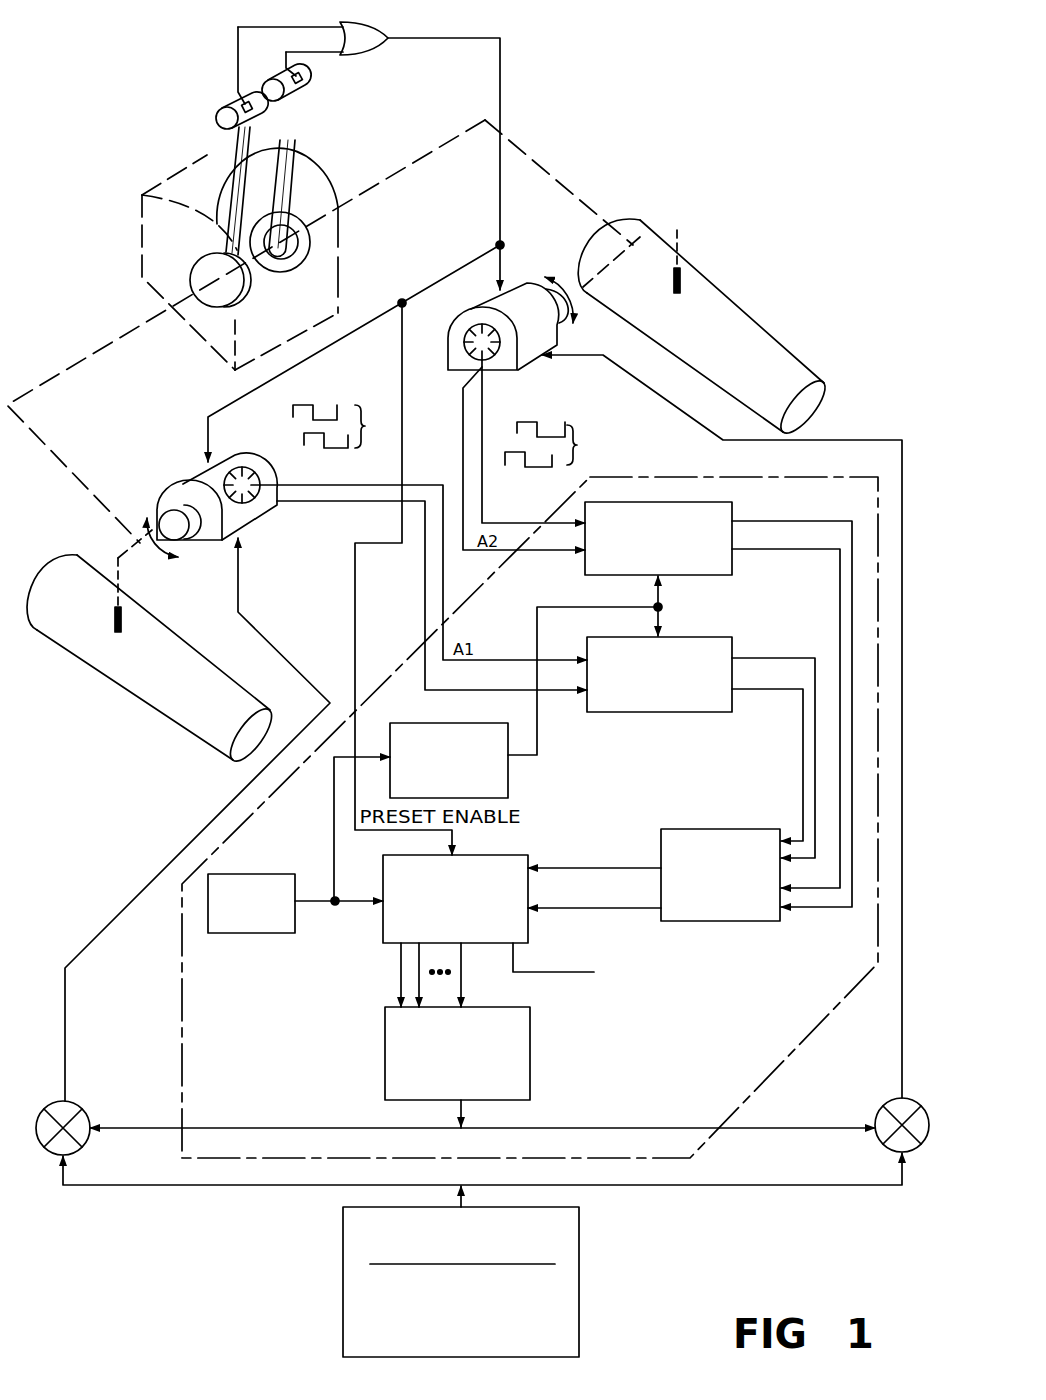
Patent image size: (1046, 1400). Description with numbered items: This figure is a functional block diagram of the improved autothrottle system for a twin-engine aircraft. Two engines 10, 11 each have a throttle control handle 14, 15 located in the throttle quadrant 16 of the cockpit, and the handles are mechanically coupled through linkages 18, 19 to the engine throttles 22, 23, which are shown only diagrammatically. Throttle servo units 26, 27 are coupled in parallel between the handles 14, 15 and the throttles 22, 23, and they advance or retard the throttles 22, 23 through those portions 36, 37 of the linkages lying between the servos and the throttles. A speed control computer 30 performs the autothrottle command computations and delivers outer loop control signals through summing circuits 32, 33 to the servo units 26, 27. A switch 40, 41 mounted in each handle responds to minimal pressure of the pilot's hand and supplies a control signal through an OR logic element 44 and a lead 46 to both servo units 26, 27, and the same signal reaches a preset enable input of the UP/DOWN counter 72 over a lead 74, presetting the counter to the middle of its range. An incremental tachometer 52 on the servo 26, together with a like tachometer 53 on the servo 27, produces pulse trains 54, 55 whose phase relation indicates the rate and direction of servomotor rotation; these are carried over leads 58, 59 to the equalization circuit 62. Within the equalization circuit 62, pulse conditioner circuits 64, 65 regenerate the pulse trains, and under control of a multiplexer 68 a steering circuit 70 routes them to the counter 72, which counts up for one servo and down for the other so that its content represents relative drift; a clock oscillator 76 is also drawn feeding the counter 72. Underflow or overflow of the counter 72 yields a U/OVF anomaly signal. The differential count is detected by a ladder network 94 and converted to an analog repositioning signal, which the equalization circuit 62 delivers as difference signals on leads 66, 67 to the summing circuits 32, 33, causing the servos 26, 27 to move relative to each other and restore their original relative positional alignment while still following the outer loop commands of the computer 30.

The engine 10 is at (137, 706).
The engine 11 is at (775, 310).
The throttle control handle 14 is at (219, 167).
The throttle control handle 15 is at (306, 162).
The throttle quadrant 16 is at (142, 240).
The mechanical linkage 18 is at (63, 462).
The mechanical linkage 19 is at (557, 188).
The engine throttle 22 is at (125, 618).
The engine throttle 23 is at (684, 280).
The throttle servo unit 26 is at (218, 493).
The throttle servo unit 27 is at (491, 345).
The speed control computer 30 is at (579, 1288).
The summing circuit 32 is at (77, 1100).
The summing circuit 33 is at (893, 1098).
The linkage portion 36 is at (125, 552).
The linkage portion 37 is at (638, 247).
The switch 40 is at (247, 98).
The switch 41 is at (312, 77).
The OR logic element 44 is at (387, 32).
The lead 46 is at (307, 360).
The tachometer 52 is at (247, 465).
The encoder disk 53 is at (447, 330).
The pulse train signal 54 is at (342, 426).
The pulse train signal 55 is at (554, 444).
The lead 58 is at (425, 570).
The lead 59 is at (487, 495).
The equalization circuit 62 is at (684, 1046).
The pulse conditioner circuit 64 is at (732, 645).
The pulse conditioner circuit 65 is at (732, 560).
The lead 66 is at (261, 1127).
The lead 67 is at (647, 1127).
The multiplexer 68 is at (508, 778).
The steering circuit 70 is at (722, 829).
The UP/DOWN counter 72 is at (381, 930).
The lead 74 is at (358, 617).
The clock oscillator 76 is at (261, 874).
The ladder network 94 is at (532, 1055).